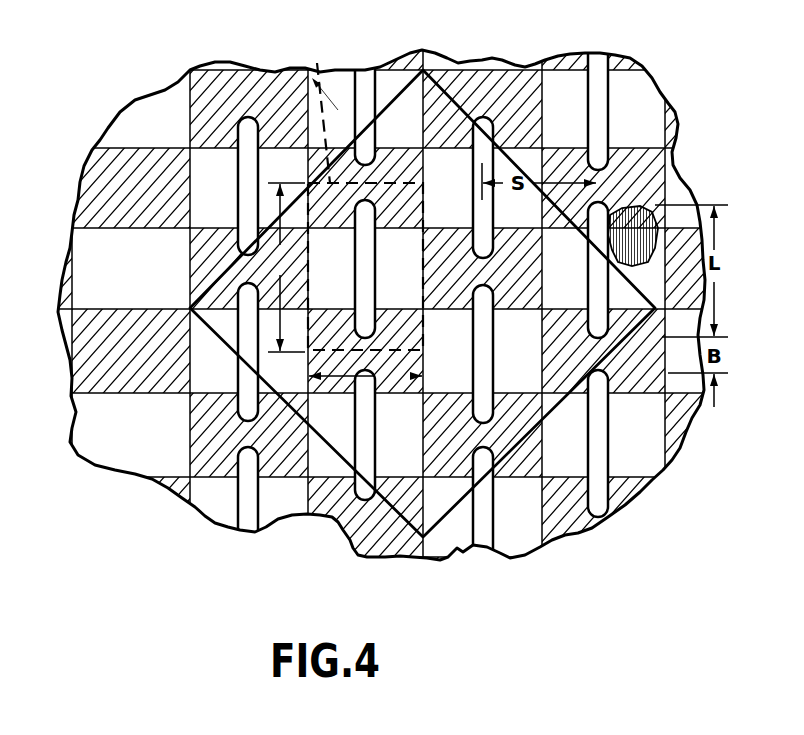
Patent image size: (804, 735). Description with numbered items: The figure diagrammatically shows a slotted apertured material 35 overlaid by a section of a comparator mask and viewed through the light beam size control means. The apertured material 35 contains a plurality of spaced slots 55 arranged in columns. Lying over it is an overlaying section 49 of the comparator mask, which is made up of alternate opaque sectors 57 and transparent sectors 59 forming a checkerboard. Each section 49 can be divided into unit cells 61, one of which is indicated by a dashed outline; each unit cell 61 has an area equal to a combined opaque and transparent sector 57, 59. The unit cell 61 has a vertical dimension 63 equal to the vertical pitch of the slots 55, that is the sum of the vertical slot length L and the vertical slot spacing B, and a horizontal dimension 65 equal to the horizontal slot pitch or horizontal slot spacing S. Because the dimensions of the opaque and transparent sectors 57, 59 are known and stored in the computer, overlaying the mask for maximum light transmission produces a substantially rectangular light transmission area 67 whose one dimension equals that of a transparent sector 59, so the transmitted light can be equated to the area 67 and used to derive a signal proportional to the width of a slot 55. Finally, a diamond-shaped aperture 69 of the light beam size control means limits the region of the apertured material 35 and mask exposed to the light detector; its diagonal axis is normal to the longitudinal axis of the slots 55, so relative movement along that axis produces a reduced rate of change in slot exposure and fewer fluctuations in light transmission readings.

The apertured material 35 is at (637, 233).
The overlaying section 49 is at (484, 59).
The slots 55 is at (597, 300).
The opaque sectors 57 is at (517, 92).
The transparent sectors 59 is at (632, 97).
The unit cell 61 is at (311, 58).
The vertical dimension 63 is at (284, 267).
The horizontal dimension 65 is at (365, 376).
The light transmission area 67 is at (368, 274).
The diamond-shaped aperture 69 is at (451, 513).